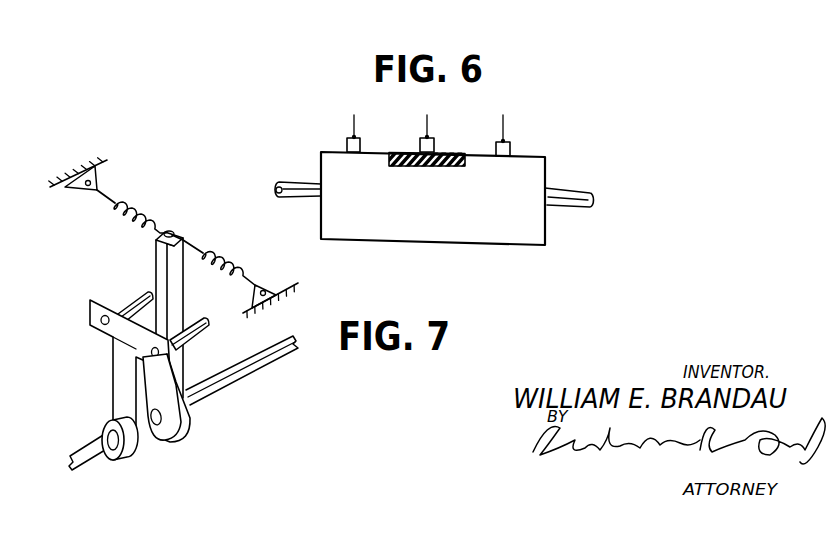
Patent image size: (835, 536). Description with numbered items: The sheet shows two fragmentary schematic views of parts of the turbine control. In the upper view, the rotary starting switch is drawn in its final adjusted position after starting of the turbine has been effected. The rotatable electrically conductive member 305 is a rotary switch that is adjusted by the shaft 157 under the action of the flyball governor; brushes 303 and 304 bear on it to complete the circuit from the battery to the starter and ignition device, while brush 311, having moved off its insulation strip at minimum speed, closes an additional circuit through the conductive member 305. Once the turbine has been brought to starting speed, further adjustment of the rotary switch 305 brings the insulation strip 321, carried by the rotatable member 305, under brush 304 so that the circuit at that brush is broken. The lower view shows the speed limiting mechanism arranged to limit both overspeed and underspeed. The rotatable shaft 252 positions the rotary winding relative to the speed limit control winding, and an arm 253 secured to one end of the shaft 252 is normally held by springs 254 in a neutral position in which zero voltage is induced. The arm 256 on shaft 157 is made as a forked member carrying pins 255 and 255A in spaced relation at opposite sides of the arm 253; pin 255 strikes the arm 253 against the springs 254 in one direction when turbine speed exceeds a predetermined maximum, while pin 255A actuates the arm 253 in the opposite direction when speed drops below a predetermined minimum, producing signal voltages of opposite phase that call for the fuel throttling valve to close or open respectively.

In FIG. 6, the brush 303 is at (346, 147).
In FIG. 6, the brush 304 is at (434, 149).
In FIG. 6, the brush 311 is at (513, 150).
In FIG. 6, the insulation strip 321 is at (452, 168).
In FIG. 6, the rotatable electrical conductive member 305 is at (453, 235).
In FIG. 7, the springs 254 is at (142, 213).
In FIG. 7, the arm 253 is at (184, 297).
In FIG. 7, the pin 255A is at (133, 293).
In FIG. 7, the pin 255 is at (195, 338).
In FIG. 7, the arm 256 is at (117, 374).
In FIG. 7, the rotatable shaft 252 is at (232, 388).
In FIG. 7, the shaft 157 is at (88, 448).